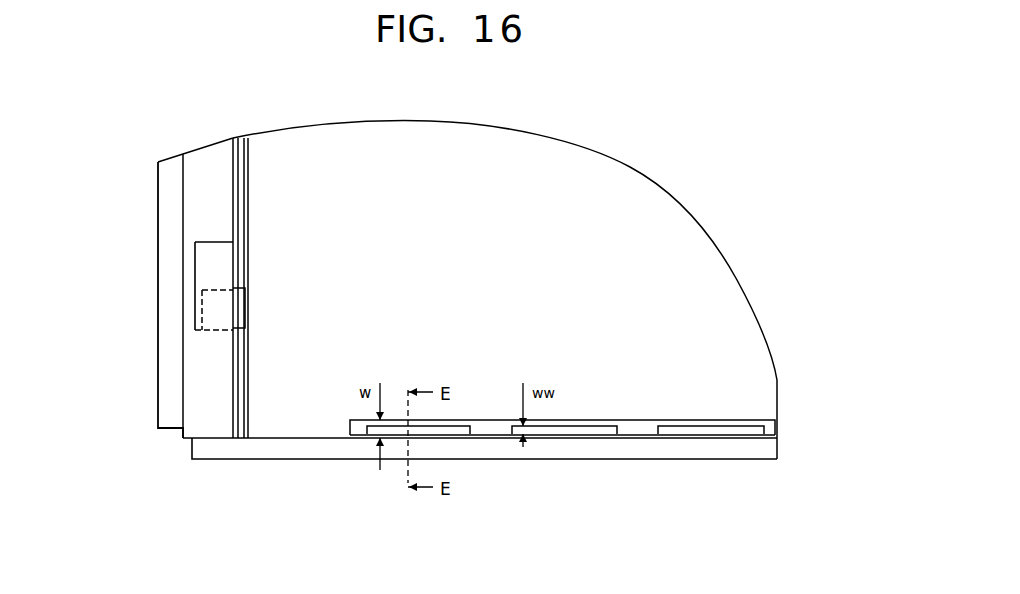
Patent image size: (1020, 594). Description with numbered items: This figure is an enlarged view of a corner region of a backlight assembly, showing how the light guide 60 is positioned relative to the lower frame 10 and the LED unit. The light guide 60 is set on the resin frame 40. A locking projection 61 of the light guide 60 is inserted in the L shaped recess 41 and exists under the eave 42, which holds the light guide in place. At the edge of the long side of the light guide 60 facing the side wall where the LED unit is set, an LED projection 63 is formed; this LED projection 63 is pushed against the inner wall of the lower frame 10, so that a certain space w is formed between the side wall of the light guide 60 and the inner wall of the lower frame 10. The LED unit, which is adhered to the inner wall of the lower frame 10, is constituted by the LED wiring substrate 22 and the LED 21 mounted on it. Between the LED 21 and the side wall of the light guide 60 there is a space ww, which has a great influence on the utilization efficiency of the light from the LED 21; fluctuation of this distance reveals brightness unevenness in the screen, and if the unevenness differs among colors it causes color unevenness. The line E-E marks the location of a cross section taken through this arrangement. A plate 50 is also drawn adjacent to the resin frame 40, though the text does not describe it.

The lower frame 10 is at (158, 395).
The LED 21 is at (568, 428).
The LED wiring substrate 22 is at (492, 438).
The resin frame 40 is at (207, 175).
The L shaped recess 41 is at (205, 263).
The eave 42 is at (197, 298).
The plate 50 is at (237, 202).
The light guide 60 is at (633, 253).
The locking projection 61 is at (212, 313).
The LED projection 63 is at (302, 434).